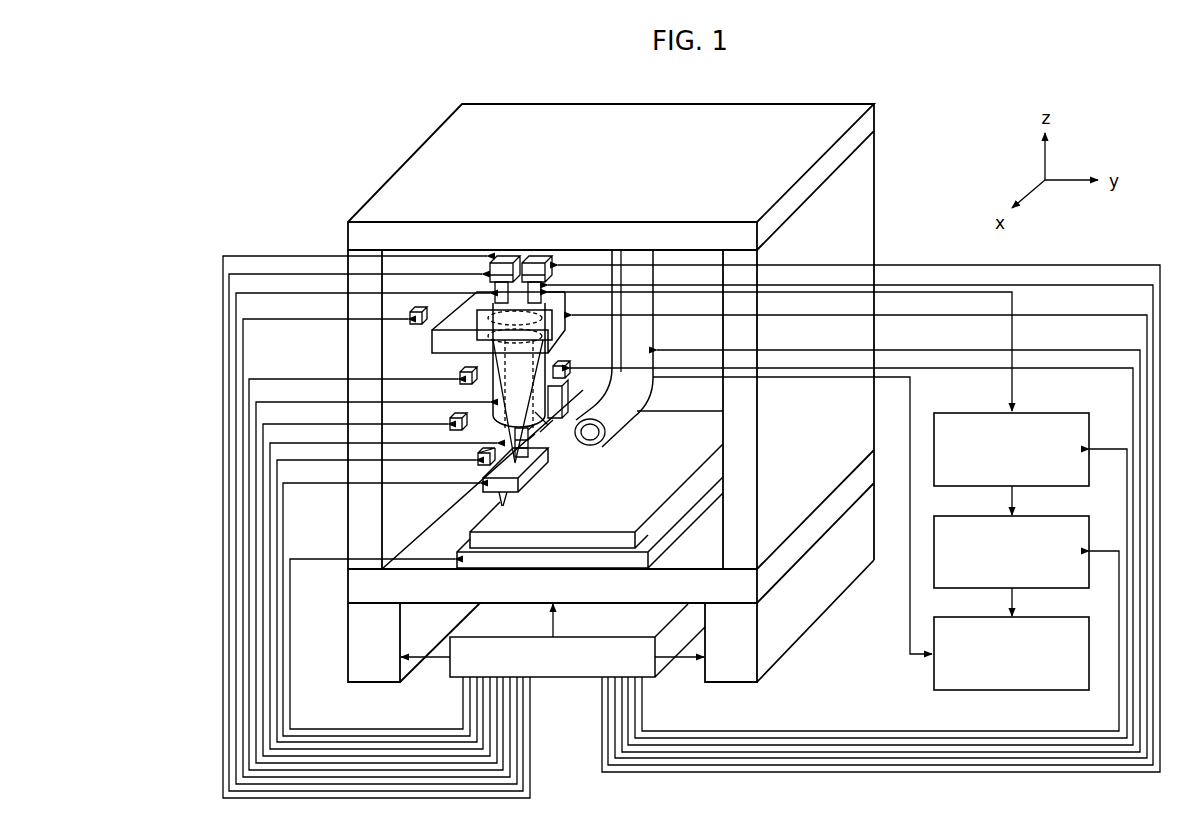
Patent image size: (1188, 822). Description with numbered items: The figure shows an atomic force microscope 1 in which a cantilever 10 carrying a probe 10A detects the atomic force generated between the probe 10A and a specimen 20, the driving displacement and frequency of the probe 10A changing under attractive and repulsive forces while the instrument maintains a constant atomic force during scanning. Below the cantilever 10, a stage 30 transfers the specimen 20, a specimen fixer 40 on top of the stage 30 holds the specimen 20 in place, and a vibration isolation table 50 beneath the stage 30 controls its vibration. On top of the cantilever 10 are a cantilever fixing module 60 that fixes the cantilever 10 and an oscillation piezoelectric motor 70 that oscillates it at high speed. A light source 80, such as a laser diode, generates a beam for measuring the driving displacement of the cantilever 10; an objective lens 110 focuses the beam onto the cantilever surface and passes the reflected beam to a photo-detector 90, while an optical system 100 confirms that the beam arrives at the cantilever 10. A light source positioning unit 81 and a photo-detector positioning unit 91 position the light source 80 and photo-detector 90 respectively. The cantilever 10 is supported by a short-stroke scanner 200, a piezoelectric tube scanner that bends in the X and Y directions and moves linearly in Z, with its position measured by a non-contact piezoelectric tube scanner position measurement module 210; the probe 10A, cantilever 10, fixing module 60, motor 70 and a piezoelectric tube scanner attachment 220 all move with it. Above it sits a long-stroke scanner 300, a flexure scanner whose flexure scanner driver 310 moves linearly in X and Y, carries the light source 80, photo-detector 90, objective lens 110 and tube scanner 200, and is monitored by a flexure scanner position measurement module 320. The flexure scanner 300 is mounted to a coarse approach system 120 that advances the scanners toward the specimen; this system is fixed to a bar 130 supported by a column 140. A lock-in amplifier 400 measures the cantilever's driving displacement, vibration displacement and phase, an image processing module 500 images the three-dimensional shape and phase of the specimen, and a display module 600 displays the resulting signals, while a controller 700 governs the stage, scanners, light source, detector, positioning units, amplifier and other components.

The atomic force microscope 1 is at (887, 172).
The cantilever 10 is at (520, 486).
The probe 10A is at (499, 503).
The specimen 20 is at (478, 541).
The stage 30 is at (348, 589).
The specimen fixer 40 is at (457, 556).
The vibration isolation table 50 is at (348, 657).
The cantilever fixing module 60 is at (530, 455).
The oscillation piezoelectric motor 70 is at (533, 441).
The light source 80 is at (494, 287).
The light source positioning unit 81 is at (504, 258).
The photo-detector 90 is at (547, 290).
The photo-detector positioning unit 91 is at (541, 258).
The optical system 100 is at (628, 420).
The objective lens 110 is at (478, 335).
The coarse approach system 120 is at (617, 253).
The bar 130 is at (404, 164).
The column 140 is at (348, 349).
The short-stroke scanner 200 is at (548, 420).
The piezoelectric tube scanner position measurement module 210 is at (451, 423).
The piezoelectric tube scanner attachment 220 is at (563, 398).
The long-stroke scanner 300 is at (432, 342).
The flexure scanner driver 310 is at (483, 290).
The flexure scanner position measurement module 320 is at (418, 310).
The lock-in amplifier 400 is at (1011, 449).
The image processing module 500 is at (1011, 537).
The display module 600 is at (1011, 639).
The controller 700 is at (553, 640).